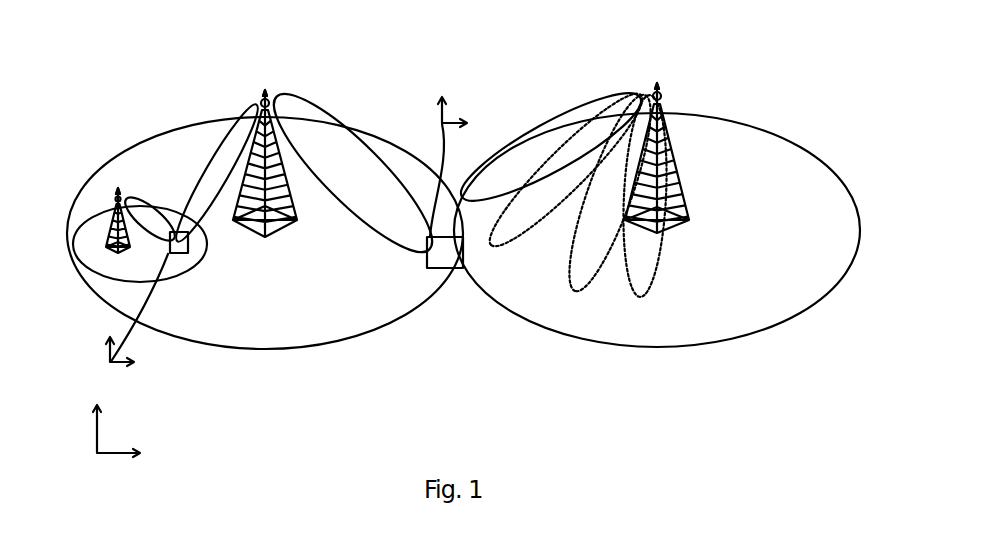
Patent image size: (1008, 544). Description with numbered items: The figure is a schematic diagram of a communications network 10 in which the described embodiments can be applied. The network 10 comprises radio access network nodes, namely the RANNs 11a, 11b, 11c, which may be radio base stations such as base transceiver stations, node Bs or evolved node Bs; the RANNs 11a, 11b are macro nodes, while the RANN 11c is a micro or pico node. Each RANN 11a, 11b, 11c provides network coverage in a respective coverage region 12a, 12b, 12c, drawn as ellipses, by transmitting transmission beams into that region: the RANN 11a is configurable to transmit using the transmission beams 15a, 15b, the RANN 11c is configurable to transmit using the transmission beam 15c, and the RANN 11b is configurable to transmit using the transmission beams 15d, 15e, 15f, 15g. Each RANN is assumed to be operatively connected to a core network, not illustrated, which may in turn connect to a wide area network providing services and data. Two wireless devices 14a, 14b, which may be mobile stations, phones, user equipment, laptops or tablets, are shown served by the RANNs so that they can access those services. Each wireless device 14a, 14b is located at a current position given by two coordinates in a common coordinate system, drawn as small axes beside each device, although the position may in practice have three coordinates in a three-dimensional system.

The communications network 10 is at (744, 53).
The radio access network node 11a is at (290, 226).
The radio access network node 11b is at (688, 211).
The radio access network node 11c is at (104, 251).
The coverage region 12a is at (203, 345).
The coverage region 12b is at (743, 338).
The coverage region 12c is at (201, 247).
The wireless device 14a is at (453, 269).
The wireless device 14b is at (181, 254).
The transmission beam 15a is at (328, 122).
The transmission beam 15b is at (224, 133).
The transmission beam 15c is at (152, 216).
The transmission beam 15d is at (585, 110).
The transmission beam 15e is at (492, 247).
The transmission beam 15f is at (574, 290).
The transmission beam 15g is at (638, 294).